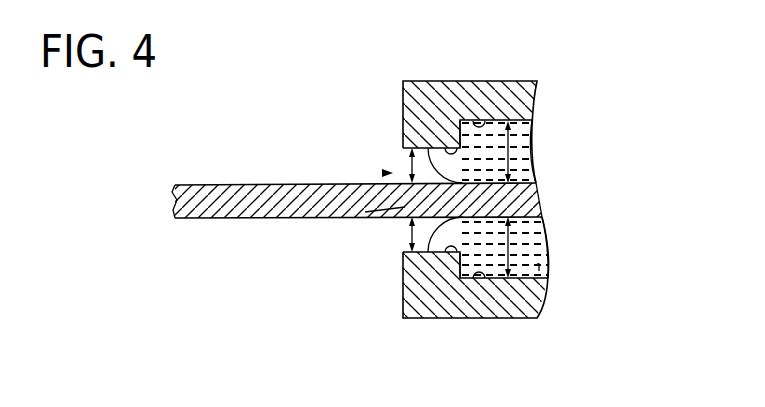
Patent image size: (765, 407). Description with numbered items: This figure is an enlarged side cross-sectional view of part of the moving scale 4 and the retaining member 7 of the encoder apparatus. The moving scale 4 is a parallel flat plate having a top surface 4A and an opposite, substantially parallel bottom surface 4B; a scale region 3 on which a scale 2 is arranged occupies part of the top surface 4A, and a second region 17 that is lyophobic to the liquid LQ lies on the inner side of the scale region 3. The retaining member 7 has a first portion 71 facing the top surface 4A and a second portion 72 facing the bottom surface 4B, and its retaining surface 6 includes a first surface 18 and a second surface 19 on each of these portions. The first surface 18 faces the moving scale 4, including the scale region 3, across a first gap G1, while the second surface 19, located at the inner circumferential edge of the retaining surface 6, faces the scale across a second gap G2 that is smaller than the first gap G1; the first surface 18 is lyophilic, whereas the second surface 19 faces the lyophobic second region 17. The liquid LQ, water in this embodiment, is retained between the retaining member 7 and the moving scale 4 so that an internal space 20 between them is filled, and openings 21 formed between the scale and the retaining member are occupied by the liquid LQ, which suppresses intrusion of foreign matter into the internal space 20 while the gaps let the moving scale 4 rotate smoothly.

The scale 2 is at (527, 178).
The scale region 3 is at (445, 195).
The moving scale 4 is at (220, 185).
The top surface 4A is at (250, 185).
The bottom surface 4B is at (256, 218).
The retaining surface 6 is at (432, 47).
The retaining member 7 is at (526, 81).
The second region 17 is at (365, 212).
The first surface 18 is at (485, 121).
The second surface 19 is at (454, 148).
The internal space 20 is at (538, 268).
The opening 21 is at (383, 173).
The first portion 71 is at (412, 81).
The second portion 72 is at (412, 318).
The first gap G1 is at (518, 145).
The second gap G2 is at (412, 163).
The liquid LQ is at (525, 160).